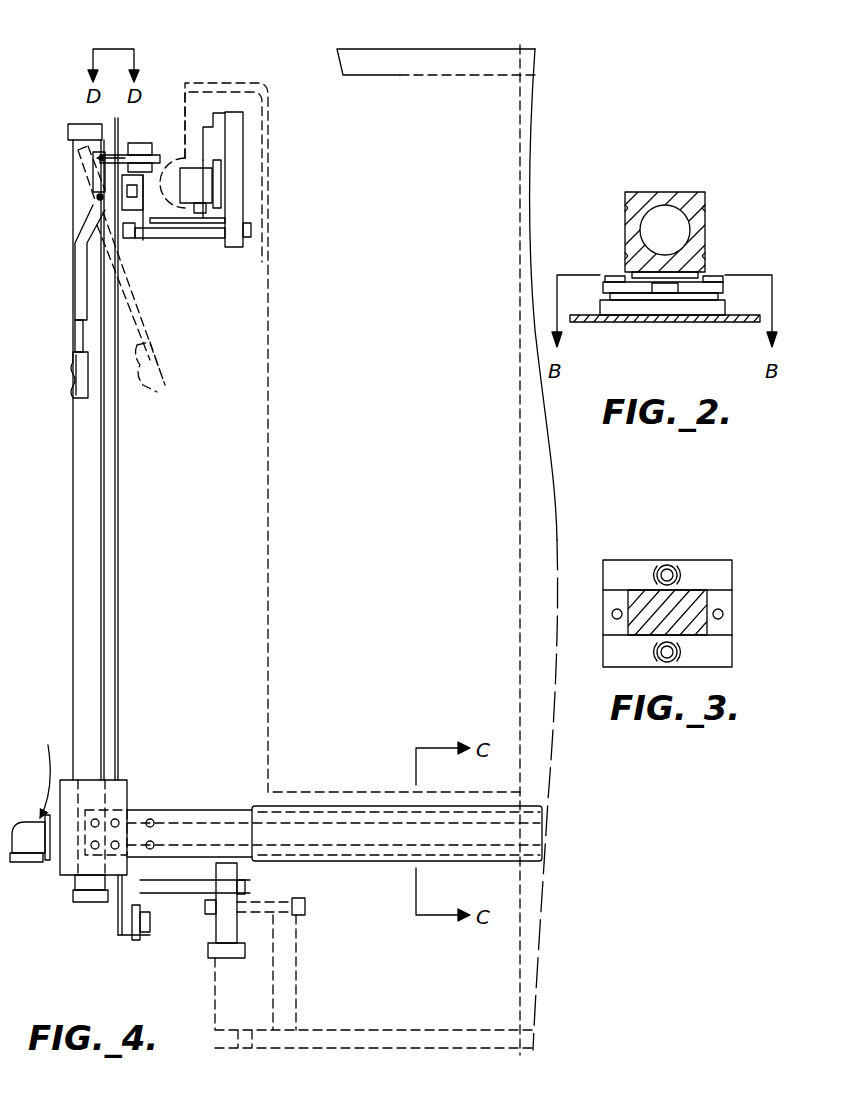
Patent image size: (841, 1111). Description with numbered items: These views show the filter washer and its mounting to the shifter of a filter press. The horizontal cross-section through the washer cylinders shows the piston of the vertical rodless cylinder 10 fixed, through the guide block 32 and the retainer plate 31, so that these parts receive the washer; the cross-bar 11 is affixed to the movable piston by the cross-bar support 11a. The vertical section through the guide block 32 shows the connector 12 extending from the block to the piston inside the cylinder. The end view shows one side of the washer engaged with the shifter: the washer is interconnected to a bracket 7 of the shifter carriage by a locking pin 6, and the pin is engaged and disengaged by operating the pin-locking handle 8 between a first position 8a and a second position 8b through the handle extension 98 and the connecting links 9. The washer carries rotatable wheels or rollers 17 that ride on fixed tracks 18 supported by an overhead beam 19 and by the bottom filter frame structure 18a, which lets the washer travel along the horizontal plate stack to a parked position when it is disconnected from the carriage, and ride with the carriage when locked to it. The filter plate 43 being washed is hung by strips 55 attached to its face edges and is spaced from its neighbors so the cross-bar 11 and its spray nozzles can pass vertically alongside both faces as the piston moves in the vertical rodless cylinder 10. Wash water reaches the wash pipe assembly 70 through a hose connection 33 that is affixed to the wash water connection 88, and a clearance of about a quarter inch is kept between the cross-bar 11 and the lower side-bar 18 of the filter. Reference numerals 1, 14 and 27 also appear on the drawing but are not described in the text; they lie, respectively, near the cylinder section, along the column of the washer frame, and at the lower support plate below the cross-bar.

In FIG. 2, the tube 1 is at (708, 197).
In FIG. 2, the retainer plate 31 is at (625, 285).
In FIG. 2, the guide block 32 is at (665, 305).
In FIG. 3, the guide block 32 is at (617, 565).
In FIG. 4, the cross-bar support 11a is at (68, 780).
In FIG. 2, the cross-bar support 11a is at (745, 315).
In FIG. 3, the connector 12 is at (690, 600).
In FIG. 4, the locking pin 6 is at (163, 148).
In FIG. 4, the bracket 7 is at (158, 150).
In FIG. 4, the pin-locking handle 8 is at (78, 392).
In FIG. 4, the handle position 8a is at (75, 365).
In FIG. 4, the handle position 8b is at (150, 350).
In FIG. 4, the connecting links 9 is at (92, 215).
In FIG. 4, the vertical rodless cylinder 10 is at (120, 610).
In FIG. 4, the cross-bar 11 is at (145, 812).
In FIG. 4, the column 14 is at (73, 620).
In FIG. 4, the rotatable wheels or rollers 17 is at (150, 230).
In FIG. 4, the fixed tracks 18 is at (145, 222).
In FIG. 4, the bottom filter frame structure 18a is at (212, 248).
In FIG. 4, the overhead beam 19 is at (240, 183).
In FIG. 4, the lower support plate 27 is at (240, 882).
In FIG. 4, the hose connection 33 is at (22, 862).
In FIG. 4, the filter plate 43 is at (447, 550).
In FIG. 4, the strips 55 is at (268, 265).
In FIG. 4, the wash pipe assembly 70 is at (32, 775).
In FIG. 4, the wash water connection 88 is at (31, 814).
In FIG. 4, the handle extension 98 is at (72, 303).